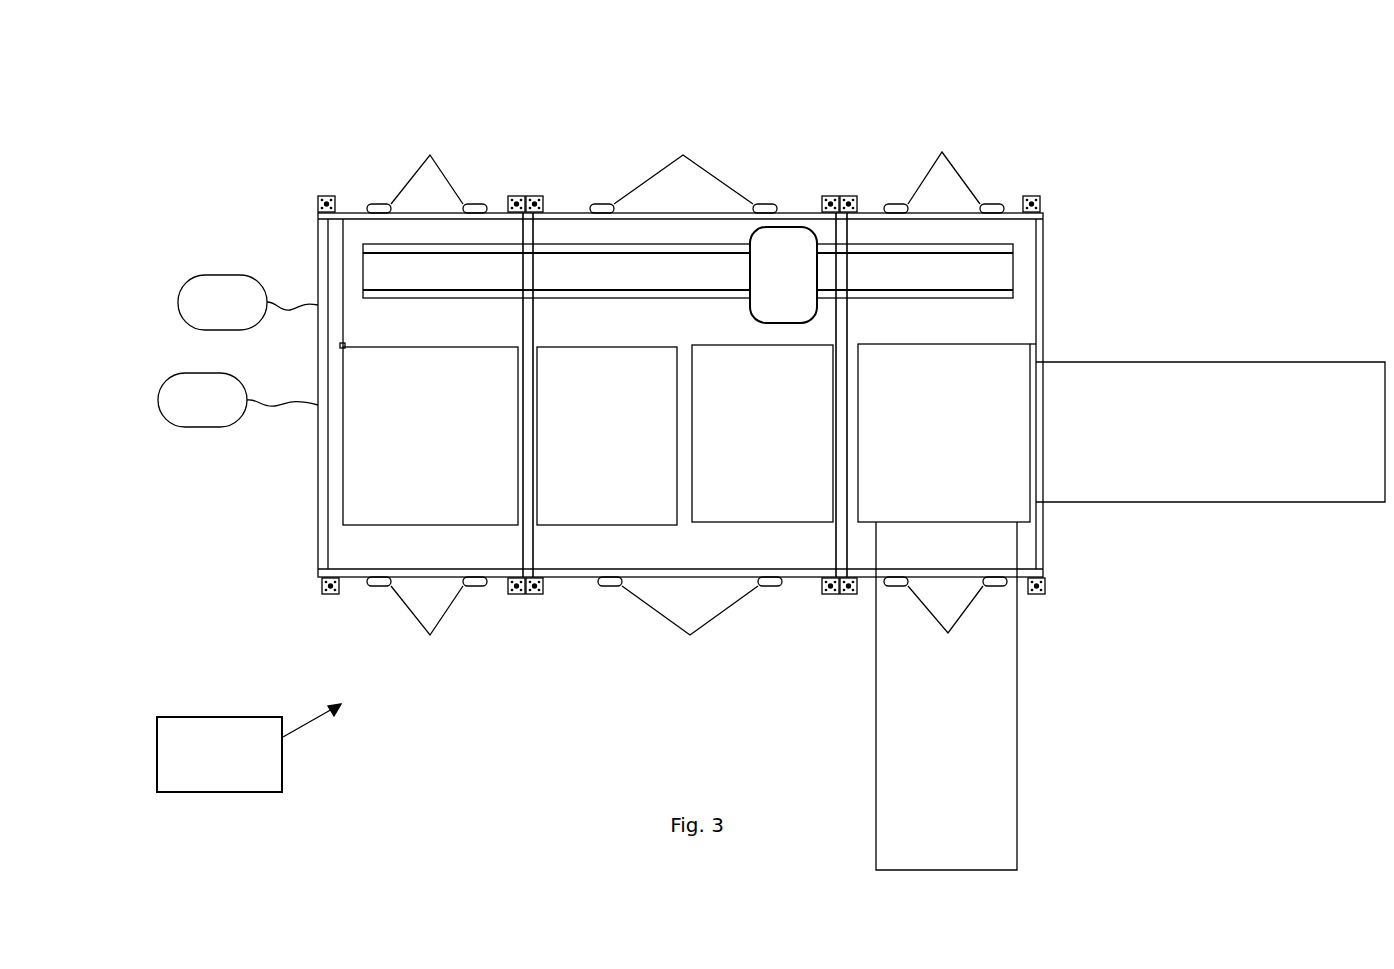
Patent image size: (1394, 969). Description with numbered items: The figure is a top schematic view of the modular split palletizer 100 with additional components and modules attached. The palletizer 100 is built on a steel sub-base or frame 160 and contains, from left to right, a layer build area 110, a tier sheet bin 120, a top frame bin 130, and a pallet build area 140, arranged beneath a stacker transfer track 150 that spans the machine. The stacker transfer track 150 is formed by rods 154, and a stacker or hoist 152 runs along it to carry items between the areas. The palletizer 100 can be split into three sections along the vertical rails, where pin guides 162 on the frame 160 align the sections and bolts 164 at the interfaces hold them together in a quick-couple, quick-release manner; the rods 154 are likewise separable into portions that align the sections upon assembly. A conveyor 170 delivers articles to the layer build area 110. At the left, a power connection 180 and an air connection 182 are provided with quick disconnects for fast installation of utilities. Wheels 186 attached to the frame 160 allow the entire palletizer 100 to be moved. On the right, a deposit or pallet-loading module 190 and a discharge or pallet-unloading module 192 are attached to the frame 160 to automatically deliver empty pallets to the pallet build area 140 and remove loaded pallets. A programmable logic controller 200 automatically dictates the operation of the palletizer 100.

The modular split palletizer 100 is at (658, 105).
The layer build area 110 is at (430, 436).
The tier sheet bin 120 is at (607, 436).
The top frame bin 130 is at (762, 433).
The pallet build area 140 is at (947, 433).
The stacker transfer track 150 is at (688, 271).
The stacker 152 is at (783, 275).
The rods 154 is at (576, 290).
The frame 160 is at (1039, 241).
The pin guides 162 is at (544, 313).
The bolts 164 is at (823, 198).
The conveyor 170 is at (333, 257).
The power connection 180 is at (185, 283).
The air connection 182 is at (163, 384).
The wheels 186 is at (681, 394).
The pallet-loading module 190 is at (1219, 376).
The pallet-unloading module 192 is at (1000, 755).
The programmable logic controller 200 is at (249, 748).